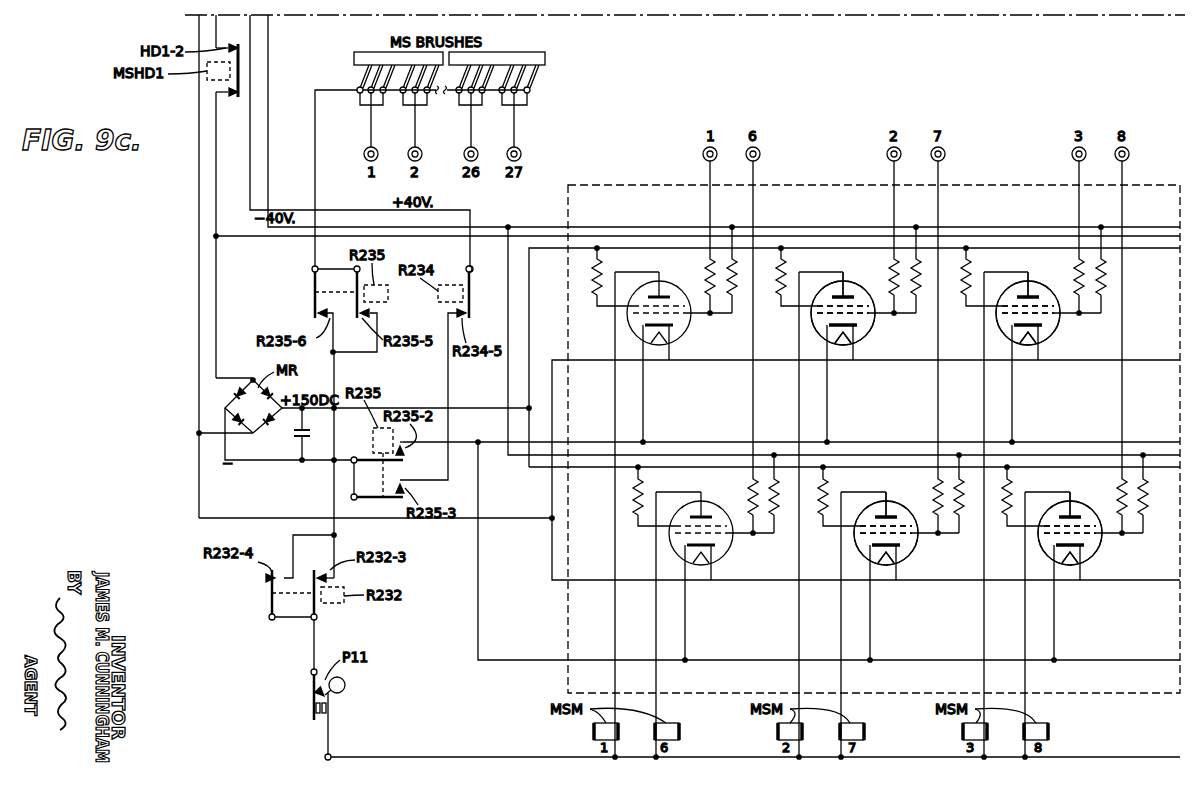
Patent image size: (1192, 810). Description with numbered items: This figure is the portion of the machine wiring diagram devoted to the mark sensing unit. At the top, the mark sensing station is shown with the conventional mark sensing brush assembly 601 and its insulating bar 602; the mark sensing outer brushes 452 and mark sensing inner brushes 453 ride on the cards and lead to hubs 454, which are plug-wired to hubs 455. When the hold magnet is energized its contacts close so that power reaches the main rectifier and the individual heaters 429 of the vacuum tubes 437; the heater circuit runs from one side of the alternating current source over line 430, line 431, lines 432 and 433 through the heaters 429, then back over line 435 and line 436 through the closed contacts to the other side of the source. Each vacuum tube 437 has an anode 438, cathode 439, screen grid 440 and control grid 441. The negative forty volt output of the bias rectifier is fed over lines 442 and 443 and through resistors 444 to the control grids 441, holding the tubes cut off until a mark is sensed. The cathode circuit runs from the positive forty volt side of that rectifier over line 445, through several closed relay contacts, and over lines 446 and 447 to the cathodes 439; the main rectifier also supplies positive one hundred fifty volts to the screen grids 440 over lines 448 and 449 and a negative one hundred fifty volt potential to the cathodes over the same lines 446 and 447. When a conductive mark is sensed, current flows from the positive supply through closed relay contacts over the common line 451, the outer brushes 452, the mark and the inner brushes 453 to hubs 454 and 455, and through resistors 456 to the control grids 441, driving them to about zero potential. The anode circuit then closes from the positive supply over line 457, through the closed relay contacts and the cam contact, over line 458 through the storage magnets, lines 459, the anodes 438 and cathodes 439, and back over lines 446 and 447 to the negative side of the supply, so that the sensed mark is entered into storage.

The heater 429 is at (669, 356).
The line 430 is at (199, 228).
The line 431 is at (252, 518).
The line 432 is at (608, 582).
The line 433 is at (616, 366).
The line 435 is at (952, 236).
The line 436 is at (216, 148).
The vacuum tube 437 is at (680, 338).
The anode 438 is at (648, 295).
The cathode 439 is at (643, 430).
The screen grid 440 is at (632, 308).
The control grid 441 is at (690, 314).
The line 442 is at (250, 198).
The line 443 is at (508, 378).
The resistor 444 is at (733, 293).
The line 445 is at (268, 148).
The line 446 is at (584, 436).
The line 447 is at (478, 615).
The line 448 is at (529, 295).
The line 449 is at (598, 467).
The common line 451 is at (318, 91).
The mark sensing outer brush 452 is at (529, 92).
The mark sensing inner brush 453 is at (515, 128).
The hub 454 is at (522, 155).
The hub 455 is at (702, 154).
The resistor 456 is at (706, 272).
The line 457 is at (334, 482).
The line 458 is at (440, 757).
The line 459 is at (799, 396).
The mark sensing brush assembly 601 is at (548, 86).
The insulating bar 602 is at (545, 65).